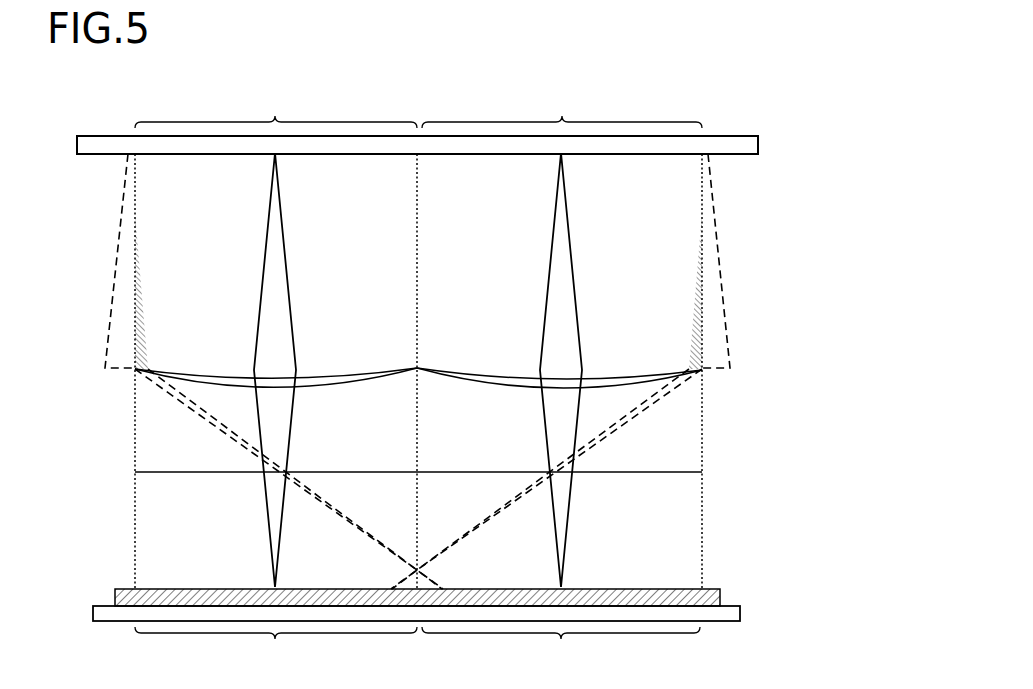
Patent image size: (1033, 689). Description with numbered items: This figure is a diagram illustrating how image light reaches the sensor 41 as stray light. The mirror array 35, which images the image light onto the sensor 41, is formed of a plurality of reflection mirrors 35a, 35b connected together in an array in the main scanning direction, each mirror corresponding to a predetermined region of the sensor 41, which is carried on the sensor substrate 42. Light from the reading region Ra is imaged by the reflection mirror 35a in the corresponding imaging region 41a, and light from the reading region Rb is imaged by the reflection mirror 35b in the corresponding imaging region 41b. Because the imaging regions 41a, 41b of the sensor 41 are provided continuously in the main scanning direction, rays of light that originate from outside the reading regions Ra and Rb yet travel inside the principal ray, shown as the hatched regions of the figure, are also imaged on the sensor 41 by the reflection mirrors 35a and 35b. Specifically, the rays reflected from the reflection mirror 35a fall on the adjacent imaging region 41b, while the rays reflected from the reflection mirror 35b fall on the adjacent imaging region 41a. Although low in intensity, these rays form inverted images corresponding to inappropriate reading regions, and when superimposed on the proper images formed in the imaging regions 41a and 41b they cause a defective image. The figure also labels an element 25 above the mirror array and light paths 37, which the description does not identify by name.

The display panel 25 is at (738, 136).
The mirror array 35 is at (471, 350).
The reflection mirror 35a is at (460, 372).
The reflection mirror 35b is at (377, 372).
The light beam 37 is at (262, 473).
The sensor 41 is at (708, 590).
The imaging region 41a is at (561, 652).
The imaging region 41b is at (276, 652).
The sensor substrate 42 is at (740, 612).
The reading region Ra is at (562, 107).
The reading region Rb is at (276, 107).